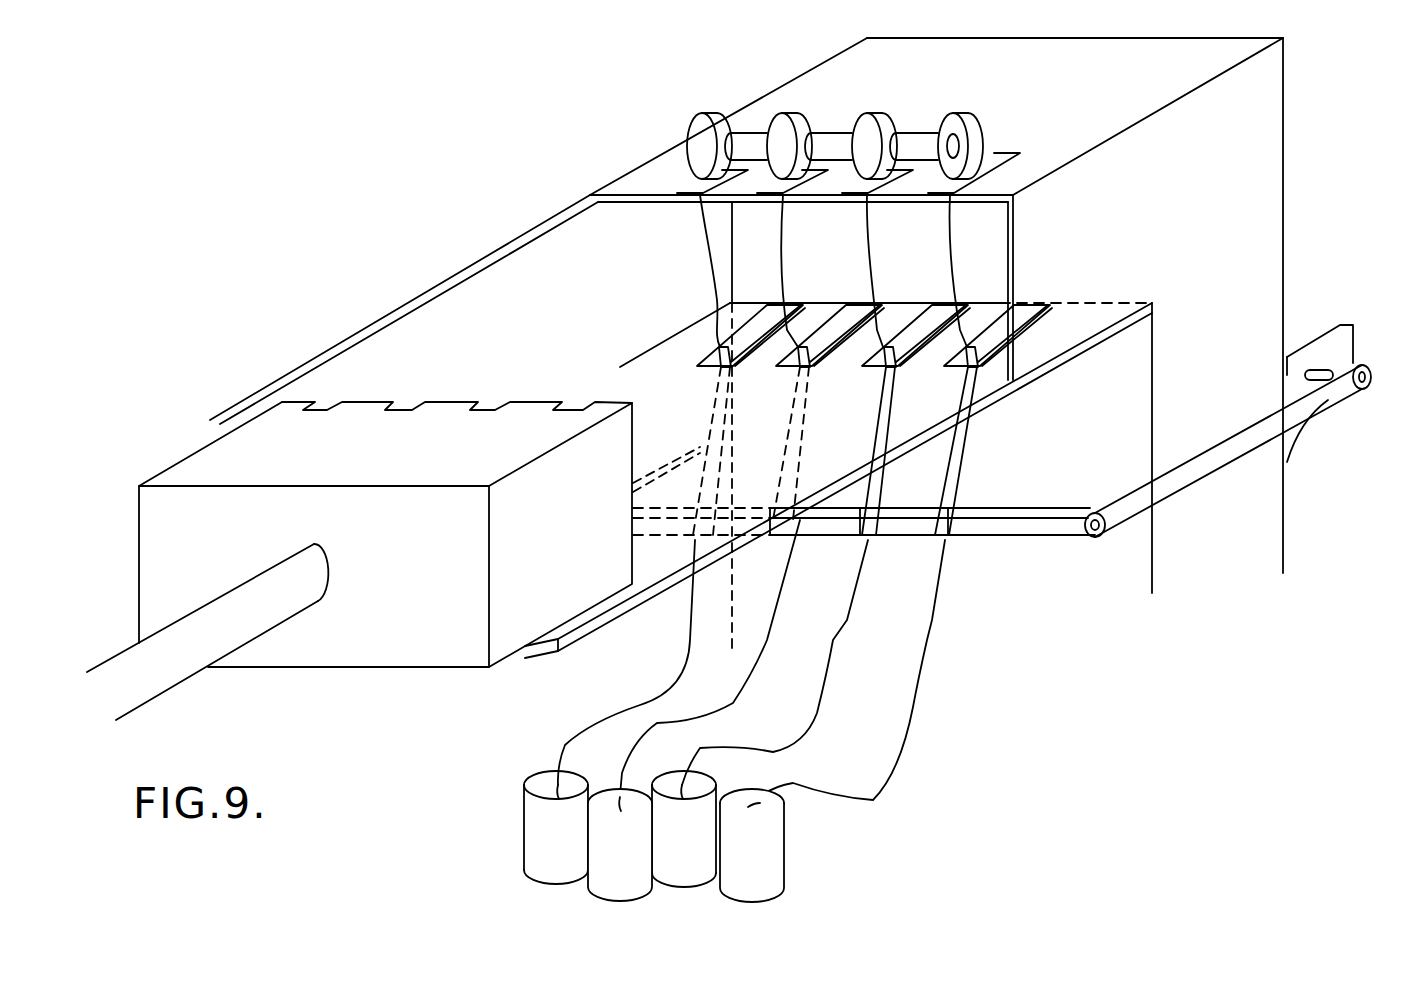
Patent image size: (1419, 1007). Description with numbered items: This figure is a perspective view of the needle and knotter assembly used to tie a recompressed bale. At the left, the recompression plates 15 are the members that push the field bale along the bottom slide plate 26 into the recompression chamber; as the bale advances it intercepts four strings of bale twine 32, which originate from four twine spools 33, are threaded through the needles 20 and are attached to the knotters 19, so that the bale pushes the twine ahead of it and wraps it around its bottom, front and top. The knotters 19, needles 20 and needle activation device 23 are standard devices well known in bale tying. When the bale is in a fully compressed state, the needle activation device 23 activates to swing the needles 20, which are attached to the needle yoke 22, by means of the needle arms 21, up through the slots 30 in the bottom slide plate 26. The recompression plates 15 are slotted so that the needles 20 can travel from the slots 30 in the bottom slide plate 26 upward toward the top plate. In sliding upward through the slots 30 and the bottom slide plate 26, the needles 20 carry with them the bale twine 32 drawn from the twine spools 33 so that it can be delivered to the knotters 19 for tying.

The recompression plates 15 is at (562, 539).
The knotter 19 is at (690, 130).
The needles 20 is at (722, 500).
The needle arms 21 is at (1170, 483).
The needle yoke 22 is at (1037, 527).
The needle activation device 23 is at (1328, 372).
The bottom slide plate 26 is at (1037, 353).
The slots 30 is at (807, 303).
The bale twine 32 is at (753, 677).
The twine spool 33 is at (542, 854).